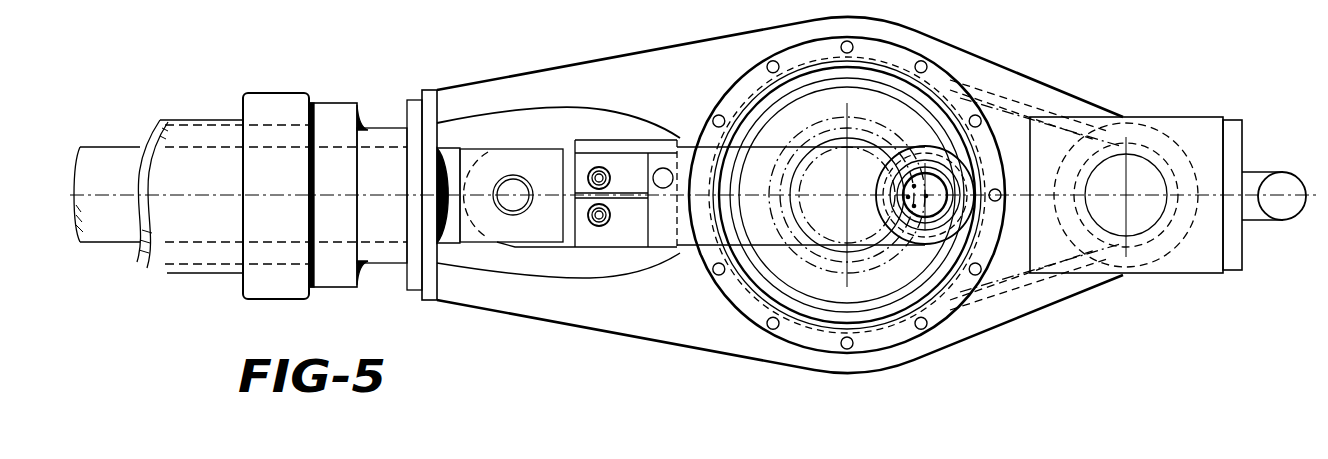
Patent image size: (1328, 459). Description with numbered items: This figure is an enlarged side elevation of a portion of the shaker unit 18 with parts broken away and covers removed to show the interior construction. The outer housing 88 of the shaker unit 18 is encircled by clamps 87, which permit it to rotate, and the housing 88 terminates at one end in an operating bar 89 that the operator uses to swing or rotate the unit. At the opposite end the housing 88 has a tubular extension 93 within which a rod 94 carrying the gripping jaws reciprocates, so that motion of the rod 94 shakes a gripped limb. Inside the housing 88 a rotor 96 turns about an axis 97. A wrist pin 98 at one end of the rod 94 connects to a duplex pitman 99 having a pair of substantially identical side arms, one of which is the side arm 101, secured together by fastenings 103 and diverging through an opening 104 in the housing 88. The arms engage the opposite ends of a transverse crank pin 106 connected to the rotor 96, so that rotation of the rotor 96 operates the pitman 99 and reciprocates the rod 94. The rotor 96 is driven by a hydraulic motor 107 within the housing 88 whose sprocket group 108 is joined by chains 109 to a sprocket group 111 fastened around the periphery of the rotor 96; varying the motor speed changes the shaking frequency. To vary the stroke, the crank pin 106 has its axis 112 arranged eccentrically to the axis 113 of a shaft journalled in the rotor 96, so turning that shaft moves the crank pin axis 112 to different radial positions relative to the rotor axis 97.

The shaker unit 18 is at (448, 87).
The clamps 87 is at (291, 100).
The outer housing 88 is at (693, 25).
The operating bar 89 is at (1279, 180).
The tubular extension 93 is at (378, 132).
The rod 94 is at (113, 150).
The rotor 96 is at (806, 119).
The axis 97 is at (847, 195).
The wrist pin 98 is at (518, 186).
The duplex pitman 99 is at (605, 147).
The side arm 101 is at (700, 236).
The fastenings 103 is at (596, 225).
The opening 104 is at (548, 120).
The crank pin 106 is at (935, 178).
The hydraulic motor 107 is at (1162, 136).
The sprocket group 108 is at (1112, 132).
The chains 109 is at (1012, 102).
The sprocket group 111 is at (985, 92).
The axis of crank pin 112 is at (937, 212).
The axis of shaft 113 is at (908, 198).